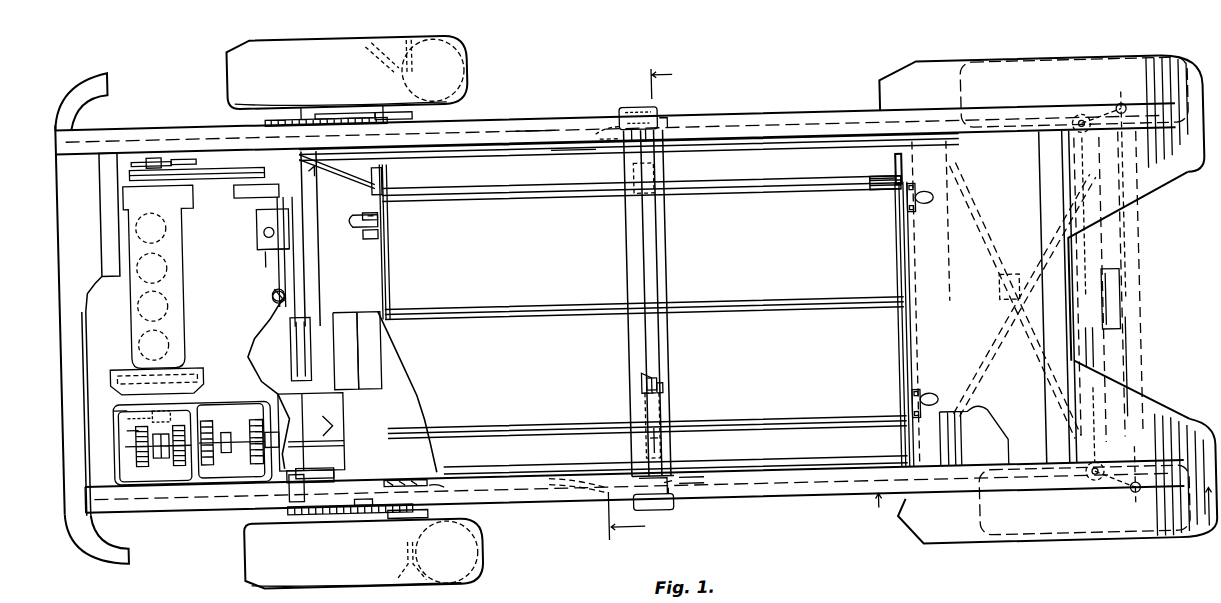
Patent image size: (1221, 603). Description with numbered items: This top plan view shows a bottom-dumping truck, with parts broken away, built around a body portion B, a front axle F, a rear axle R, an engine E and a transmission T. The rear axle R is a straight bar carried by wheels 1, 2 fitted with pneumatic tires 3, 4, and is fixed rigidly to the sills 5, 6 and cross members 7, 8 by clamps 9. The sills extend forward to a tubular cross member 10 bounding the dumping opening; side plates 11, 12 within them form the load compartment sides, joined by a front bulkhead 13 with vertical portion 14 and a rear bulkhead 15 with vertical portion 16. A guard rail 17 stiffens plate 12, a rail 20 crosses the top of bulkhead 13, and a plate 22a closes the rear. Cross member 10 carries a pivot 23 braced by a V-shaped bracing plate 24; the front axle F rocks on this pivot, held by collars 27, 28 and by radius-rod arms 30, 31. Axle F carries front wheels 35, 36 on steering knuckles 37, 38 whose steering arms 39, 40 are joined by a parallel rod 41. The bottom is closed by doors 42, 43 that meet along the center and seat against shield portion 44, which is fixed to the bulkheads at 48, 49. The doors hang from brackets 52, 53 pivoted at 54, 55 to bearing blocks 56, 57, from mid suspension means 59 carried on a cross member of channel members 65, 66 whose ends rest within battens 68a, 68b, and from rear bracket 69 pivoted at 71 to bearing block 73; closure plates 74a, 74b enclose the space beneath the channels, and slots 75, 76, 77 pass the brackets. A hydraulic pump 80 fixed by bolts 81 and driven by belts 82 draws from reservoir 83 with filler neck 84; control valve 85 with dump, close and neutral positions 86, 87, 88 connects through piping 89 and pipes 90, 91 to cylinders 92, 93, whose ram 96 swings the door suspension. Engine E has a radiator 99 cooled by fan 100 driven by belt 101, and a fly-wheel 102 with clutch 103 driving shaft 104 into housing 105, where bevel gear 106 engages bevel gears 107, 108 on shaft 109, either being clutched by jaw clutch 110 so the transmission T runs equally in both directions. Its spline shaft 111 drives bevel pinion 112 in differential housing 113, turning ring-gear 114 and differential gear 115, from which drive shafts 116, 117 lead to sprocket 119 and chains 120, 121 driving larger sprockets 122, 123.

The wheel 1 is at (385, 38).
The wheel 2 is at (1042, 511).
The pneumatic tire 3 is at (440, 64).
The pneumatic tire 4 is at (648, 302).
The sill 5 is at (522, 125).
The sill 6 is at (398, 476).
The cross member 7 is at (357, 351).
The cross member 8 is at (365, 350).
The clamp 9 is at (370, 475).
The cross member 10 is at (945, 445).
The side plate 11 is at (560, 148).
The side plate 12 is at (565, 490).
The bulkhead 13 is at (963, 180).
The vertical portion 14 is at (1043, 168).
The rear bulkhead 15 is at (385, 240).
The vertical portion 16 is at (325, 290).
The guard rail 17 is at (735, 501).
The rail 20 is at (1095, 345).
The plate or bulkhead 22a is at (94, 334).
The pivot 23 is at (1012, 300).
The bracing plate 24 is at (990, 237).
The collar 27 is at (1102, 296).
The collar 28 is at (1102, 310).
The arm 30 is at (1015, 225).
The arm 31 is at (1030, 395).
The front wheel 35 is at (1170, 70).
The front wheel 36 is at (1193, 475).
The steering knuckle 37 is at (1084, 126).
The steering knuckle 38 is at (1090, 493).
The steering arm 39 is at (1127, 116).
The steering arm 40 is at (1128, 508).
The parallel rod 41 is at (1128, 380).
The door 42 is at (643, 274).
The door 43 is at (646, 393).
The shield portion 44 is at (556, 190).
The fixing point 48 is at (920, 165).
The fixing point 49 is at (358, 175).
The bracket 52 is at (902, 245).
The bracket 53 is at (901, 366).
The pivot 54 is at (910, 208).
The pivot 55 is at (910, 420).
The bearing block 56 is at (910, 218).
The bearing block 57 is at (910, 400).
The suspension means 59 is at (672, 395).
The channel member 65 is at (628, 353).
The channel member 66 is at (658, 370).
The brace or batten 68a is at (643, 109).
The brace or batten 68b is at (666, 512).
The bracket 69 is at (391, 290).
The pivot 71 is at (381, 220).
The bearing block 73 is at (382, 211).
The closure plate 74a is at (630, 385).
The closure plate 74b is at (670, 388).
The slot 75 is at (885, 192).
The slot 76 is at (657, 172).
The slot 77 is at (386, 174).
The pump 80 is at (259, 206).
The bolt 81 is at (237, 190).
The belt 82 is at (212, 165).
The reservoir 83 is at (266, 225).
The filler neck 84 is at (265, 240).
The control valve 85 is at (297, 265).
The dump position 86 is at (275, 280).
The close position 87 is at (268, 298).
The neutral position 88 is at (273, 286).
The piping 89 is at (280, 250).
The pipe 90 is at (600, 130).
The pipe 91 is at (270, 300).
The cylinder 92 is at (674, 122).
The cylinder 93 is at (670, 496).
The ram 96 is at (657, 440).
The radiator 99 is at (167, 145).
The fan 100 is at (140, 152).
The belt 101 is at (185, 150).
The fly-wheel 102 is at (192, 357).
The clutch 103 is at (195, 370).
The driven shaft 104 is at (118, 398).
The housing 105 is at (125, 408).
The bevel gear 106 is at (133, 414).
The bevel gear 107 is at (138, 456).
The bevel gear 108 is at (177, 456).
The shaft 109 is at (200, 398).
The jaw clutch 110 is at (158, 448).
The spline shaft 111 is at (228, 448).
The bevel pinion 112 is at (256, 460).
The differential housing 113 is at (320, 415).
The ring-gear 114 is at (341, 438).
The differential gear 115 is at (272, 455).
The drive shaft 116 is at (292, 378).
The drive shaft 117 is at (286, 476).
The sprocket 119 is at (297, 124).
The chain 120 is at (368, 118).
The chain 121 is at (378, 511).
The larger sprocket 122 is at (412, 115).
The larger sprocket 123 is at (420, 514).
The body portion B is at (724, 118).
The engine E is at (185, 290).
The front axle F is at (1110, 238).
The rear axle R is at (345, 425).
The transmission T is at (240, 390).